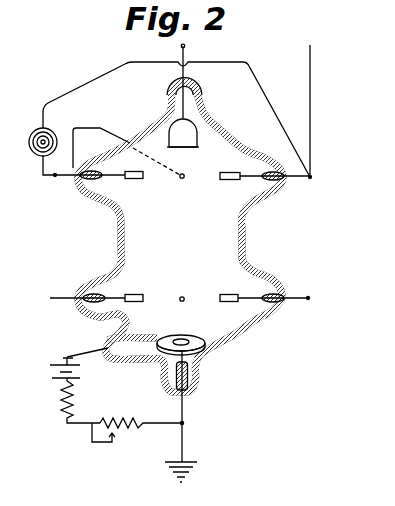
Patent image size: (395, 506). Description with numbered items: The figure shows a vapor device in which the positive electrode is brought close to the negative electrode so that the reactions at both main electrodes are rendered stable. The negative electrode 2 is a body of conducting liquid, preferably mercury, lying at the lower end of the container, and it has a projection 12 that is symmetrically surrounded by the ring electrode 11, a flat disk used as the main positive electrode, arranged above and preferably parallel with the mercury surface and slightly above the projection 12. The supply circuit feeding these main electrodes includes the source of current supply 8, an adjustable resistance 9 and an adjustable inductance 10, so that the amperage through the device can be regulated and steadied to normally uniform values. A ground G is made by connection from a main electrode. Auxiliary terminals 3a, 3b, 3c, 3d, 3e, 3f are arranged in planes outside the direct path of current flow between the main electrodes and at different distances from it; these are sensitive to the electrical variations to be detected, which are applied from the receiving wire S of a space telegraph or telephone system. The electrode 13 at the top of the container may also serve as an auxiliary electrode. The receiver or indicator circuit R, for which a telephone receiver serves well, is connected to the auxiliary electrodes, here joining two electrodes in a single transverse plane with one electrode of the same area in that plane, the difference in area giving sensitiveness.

The receiver or indicator circuit R is at (69, 152).
The receiving wire S is at (310, 68).
The electrode at the top of the container 13 is at (200, 127).
The auxiliary terminal 3a is at (113, 186).
The auxiliary terminal 3b is at (162, 175).
The auxiliary terminal 3c is at (264, 187).
The auxiliary terminal 3d is at (100, 289).
The auxiliary terminal 3e is at (186, 289).
The auxiliary terminal 3f is at (265, 289).
The ring electrode 11 is at (184, 340).
The projection of the negative electrode 12 is at (106, 368).
The negative electrode 2 is at (196, 373).
The ground G is at (181, 477).
The source of current supply 8 is at (55, 370).
The adjustable resistance 9 is at (69, 402).
The adjustable inductance 10 is at (137, 422).